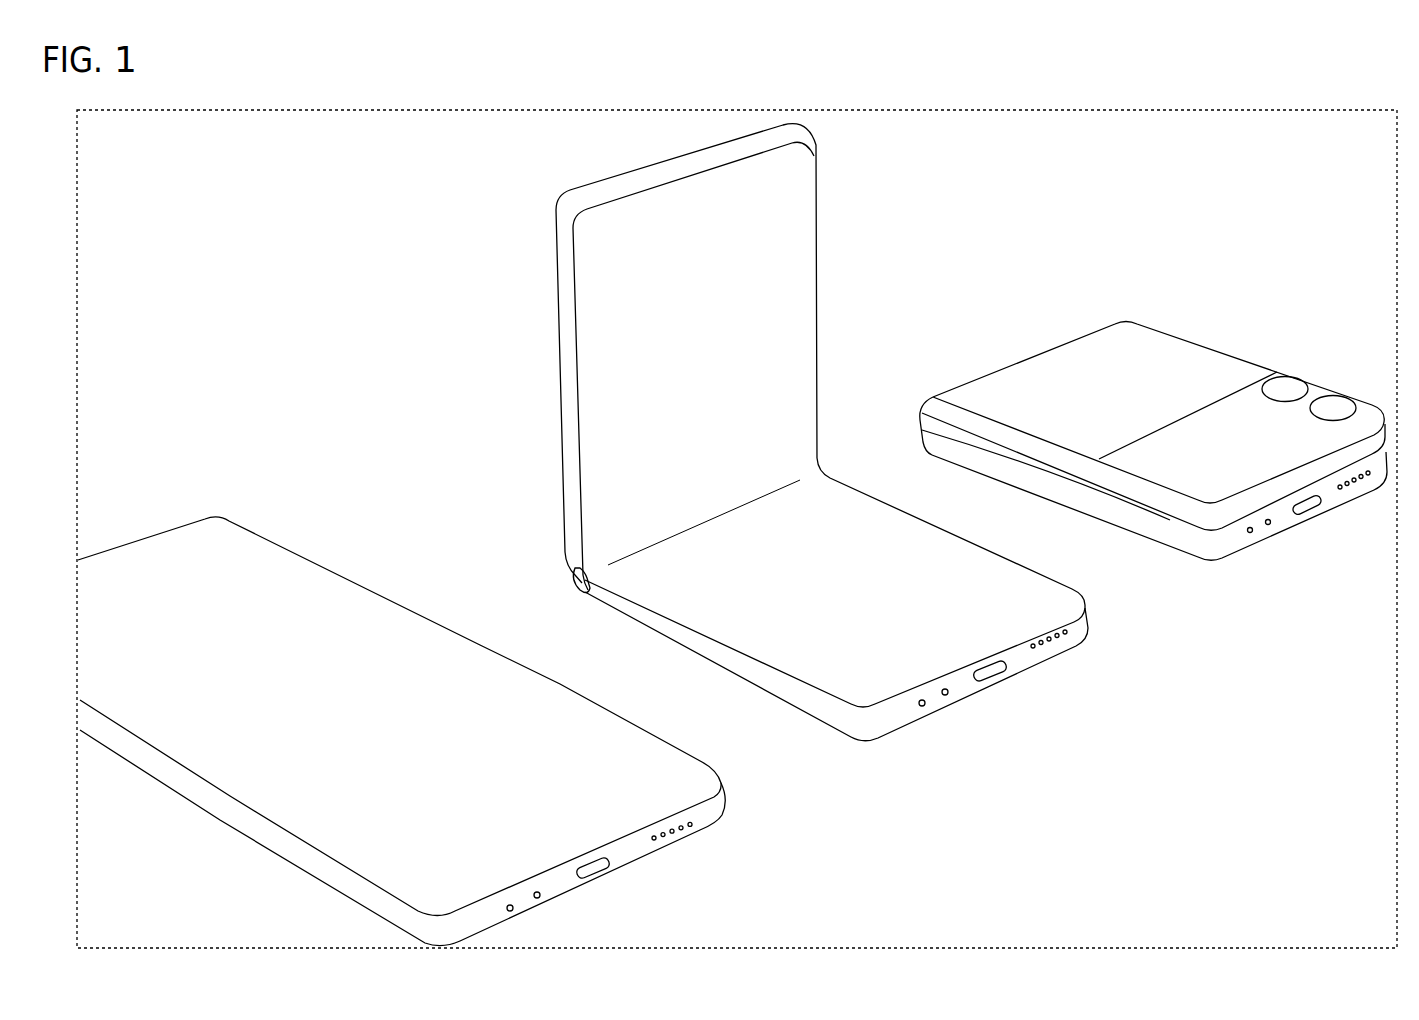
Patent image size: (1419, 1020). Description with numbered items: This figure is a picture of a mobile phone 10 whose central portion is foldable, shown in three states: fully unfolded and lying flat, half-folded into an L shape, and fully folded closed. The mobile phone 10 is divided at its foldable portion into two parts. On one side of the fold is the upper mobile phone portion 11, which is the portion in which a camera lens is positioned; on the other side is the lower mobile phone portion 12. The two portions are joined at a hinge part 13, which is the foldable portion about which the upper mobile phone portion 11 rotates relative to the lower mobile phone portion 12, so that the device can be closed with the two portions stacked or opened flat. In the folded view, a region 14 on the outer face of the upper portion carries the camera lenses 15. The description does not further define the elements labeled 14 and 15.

The mobile phone 10 is at (732, 535).
The upper mobile phone portion 11 is at (558, 343).
The lower mobile phone portion 12 is at (781, 700).
The hinge part 13 is at (576, 585).
The camera region 14 is at (1213, 428).
The camera 15 is at (1290, 386).